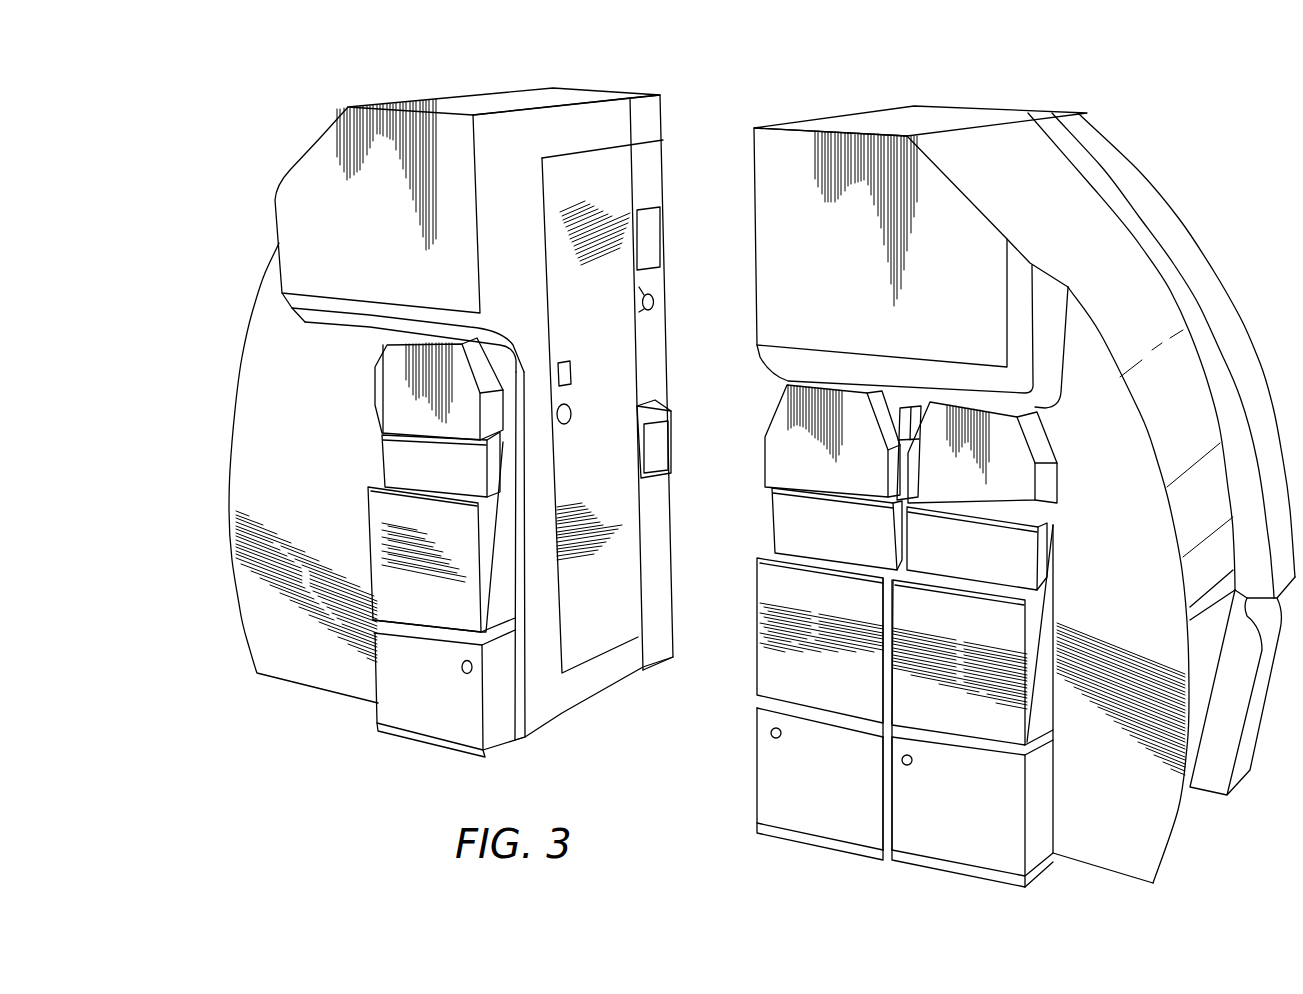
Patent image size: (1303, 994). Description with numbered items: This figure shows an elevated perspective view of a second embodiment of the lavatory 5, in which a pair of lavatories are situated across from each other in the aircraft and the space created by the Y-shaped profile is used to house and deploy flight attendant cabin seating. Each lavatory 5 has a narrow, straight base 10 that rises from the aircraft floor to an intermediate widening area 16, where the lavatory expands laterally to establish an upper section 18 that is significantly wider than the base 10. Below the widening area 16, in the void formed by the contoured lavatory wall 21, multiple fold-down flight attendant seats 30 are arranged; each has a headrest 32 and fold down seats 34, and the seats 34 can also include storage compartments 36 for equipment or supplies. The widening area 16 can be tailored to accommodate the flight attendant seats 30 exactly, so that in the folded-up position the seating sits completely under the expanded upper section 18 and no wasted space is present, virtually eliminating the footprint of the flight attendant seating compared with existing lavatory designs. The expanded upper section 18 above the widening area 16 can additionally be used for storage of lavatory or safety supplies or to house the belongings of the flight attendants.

The lavatory 5 is at (606, 77).
The base 10 is at (1108, 853).
The widening area 16 is at (500, 299).
The upper section 18 is at (650, 173).
The contoured lavatory wall 21 is at (1050, 405).
The flight attendant seats 30 is at (396, 421).
The headrest 32 is at (843, 484).
The fold down seats 34 is at (838, 608).
The storage compartments 36 is at (504, 714).